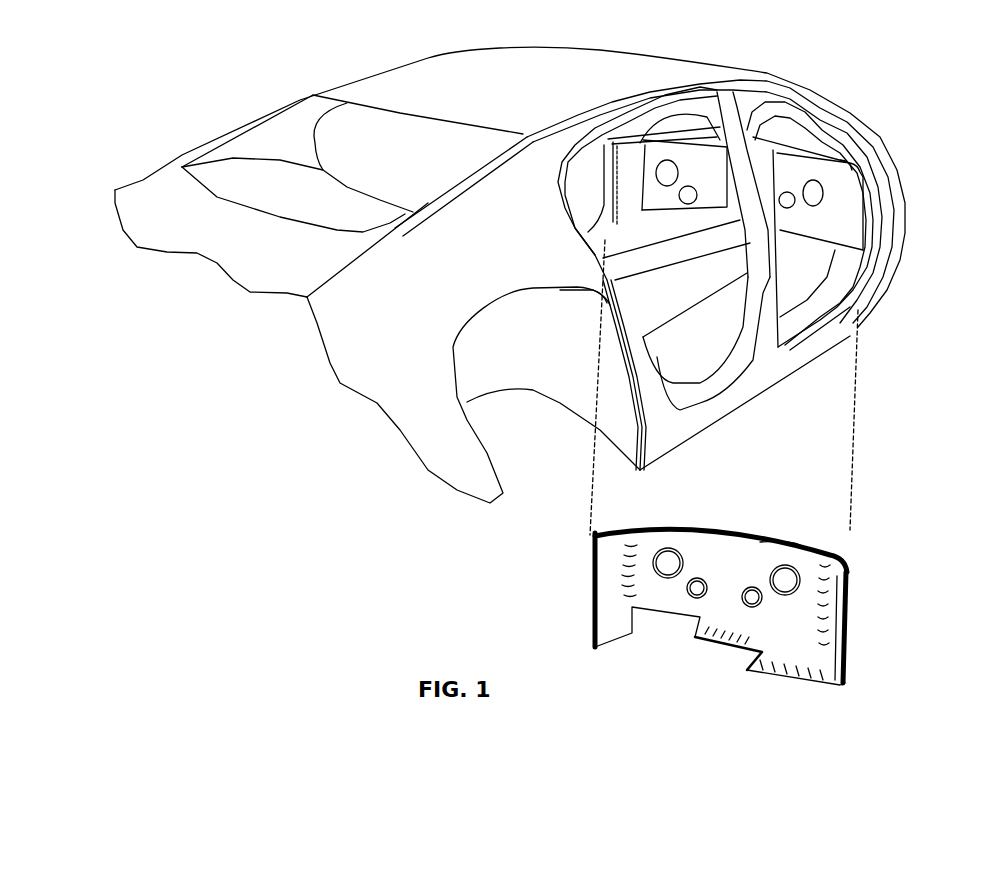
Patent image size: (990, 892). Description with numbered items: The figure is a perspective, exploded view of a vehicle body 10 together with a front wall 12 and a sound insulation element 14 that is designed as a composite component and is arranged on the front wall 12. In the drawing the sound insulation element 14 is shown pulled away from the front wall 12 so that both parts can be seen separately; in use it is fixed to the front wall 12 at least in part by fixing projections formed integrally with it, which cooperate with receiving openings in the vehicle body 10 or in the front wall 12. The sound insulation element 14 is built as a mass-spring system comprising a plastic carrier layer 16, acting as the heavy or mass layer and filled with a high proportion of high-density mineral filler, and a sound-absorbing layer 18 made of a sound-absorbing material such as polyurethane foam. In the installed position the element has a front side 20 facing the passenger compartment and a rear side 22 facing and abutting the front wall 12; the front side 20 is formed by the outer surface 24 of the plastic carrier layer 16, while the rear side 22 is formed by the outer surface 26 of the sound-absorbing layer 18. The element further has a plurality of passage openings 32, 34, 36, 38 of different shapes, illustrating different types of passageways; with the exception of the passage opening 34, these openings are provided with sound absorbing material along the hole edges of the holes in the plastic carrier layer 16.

The vehicle body 10 is at (242, 92).
The front wall 12 is at (847, 222).
The sound insulation element 14 is at (729, 559).
The plastic carrier layer 16 is at (845, 682).
The sound-absorbing layer 18 is at (848, 657).
The front side 20 is at (777, 633).
The rear side 22 is at (830, 550).
The outer surface of the plastic carrier layer 24 is at (653, 595).
The outer surface of the sound-absorbing layer 26 is at (792, 543).
The passage opening 32 is at (670, 548).
The passage opening 34 is at (785, 565).
The passage opening 36 is at (700, 578).
The passage opening 38 is at (762, 588).